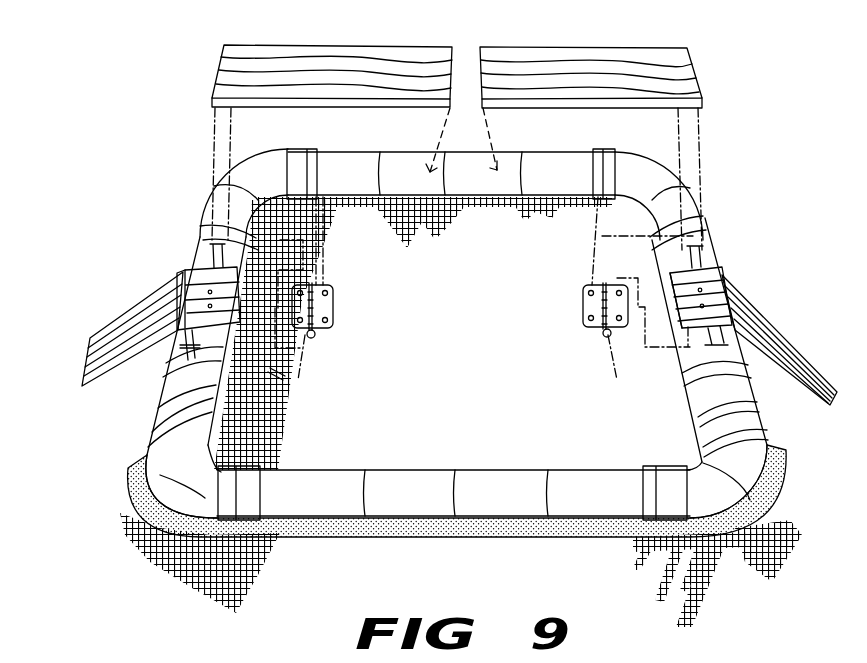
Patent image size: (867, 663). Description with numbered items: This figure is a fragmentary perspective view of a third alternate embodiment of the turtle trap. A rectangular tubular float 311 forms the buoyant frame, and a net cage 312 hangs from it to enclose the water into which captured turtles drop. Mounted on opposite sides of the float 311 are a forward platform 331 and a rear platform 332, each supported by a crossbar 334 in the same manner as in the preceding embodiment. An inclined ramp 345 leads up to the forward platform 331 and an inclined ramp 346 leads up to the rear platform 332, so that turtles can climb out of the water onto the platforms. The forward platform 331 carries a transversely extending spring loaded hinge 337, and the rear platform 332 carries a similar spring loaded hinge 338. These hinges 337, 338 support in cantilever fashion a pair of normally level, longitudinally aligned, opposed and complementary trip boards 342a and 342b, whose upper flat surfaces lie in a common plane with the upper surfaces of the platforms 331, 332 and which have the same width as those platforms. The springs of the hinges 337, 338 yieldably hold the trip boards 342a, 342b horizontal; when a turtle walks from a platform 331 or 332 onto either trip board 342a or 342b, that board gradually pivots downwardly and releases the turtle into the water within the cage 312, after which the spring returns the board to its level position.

The float 311 is at (538, 160).
The cage 312 is at (153, 563).
The forward platform 331 is at (198, 280).
The rear platform 332 is at (712, 278).
The crossbar 334 is at (277, 378).
The spring loaded hinge 337 is at (333, 298).
The spring loaded hinge 338 is at (590, 322).
The trip board 342a is at (357, 55).
The trip board 342b is at (588, 52).
The ramp 345 is at (153, 310).
The ramp 346 is at (765, 310).